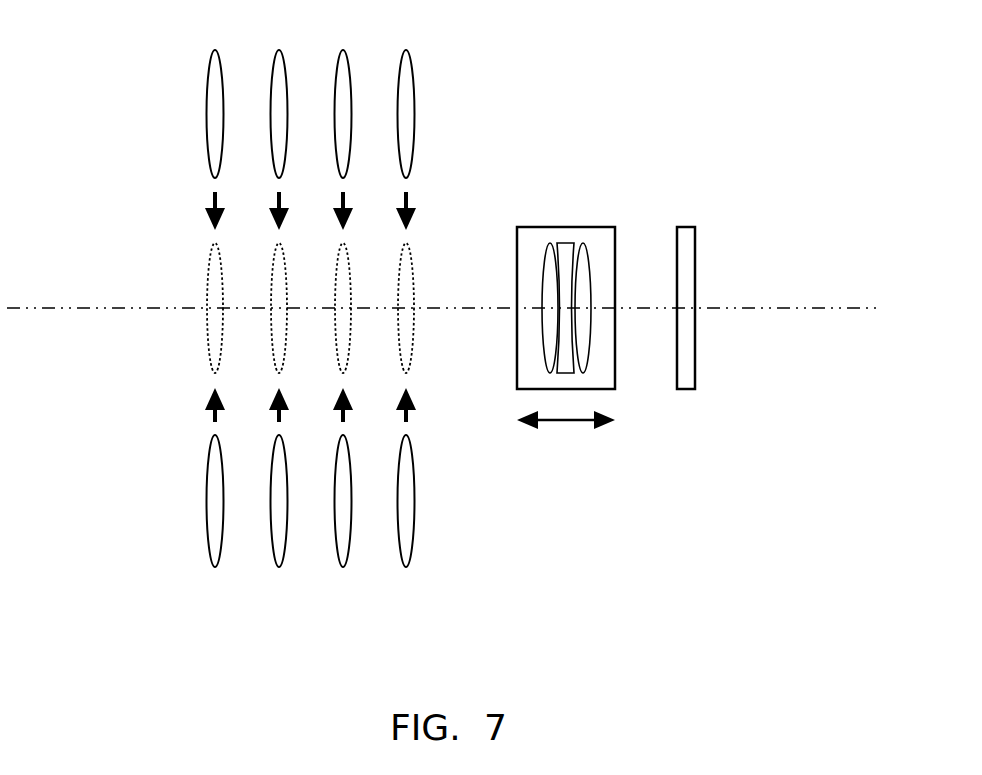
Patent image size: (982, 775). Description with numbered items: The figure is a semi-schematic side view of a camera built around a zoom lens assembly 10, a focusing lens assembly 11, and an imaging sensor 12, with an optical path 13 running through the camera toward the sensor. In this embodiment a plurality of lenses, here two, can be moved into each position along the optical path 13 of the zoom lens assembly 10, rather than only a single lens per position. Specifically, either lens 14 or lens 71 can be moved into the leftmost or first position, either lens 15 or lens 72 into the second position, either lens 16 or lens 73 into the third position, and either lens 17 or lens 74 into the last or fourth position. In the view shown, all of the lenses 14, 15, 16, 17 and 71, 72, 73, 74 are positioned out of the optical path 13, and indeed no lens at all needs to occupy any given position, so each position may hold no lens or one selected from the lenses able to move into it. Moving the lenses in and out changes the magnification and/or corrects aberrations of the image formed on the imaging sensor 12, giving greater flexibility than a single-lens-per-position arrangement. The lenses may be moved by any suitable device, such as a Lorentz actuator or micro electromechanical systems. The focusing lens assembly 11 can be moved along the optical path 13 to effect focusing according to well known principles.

The zoom lens assembly 10 is at (160, 70).
The focusing lens assembly 11 is at (567, 227).
The imaging sensor 12 is at (697, 357).
The optical path 13 is at (143, 308).
The lens 14 is at (223, 98).
The lens 15 is at (287, 98).
The lens 16 is at (351, 98).
The lens 17 is at (414, 98).
The lens 71 is at (207, 517).
The lens 72 is at (271, 517).
The lens 73 is at (335, 517).
The lens 74 is at (398, 517).